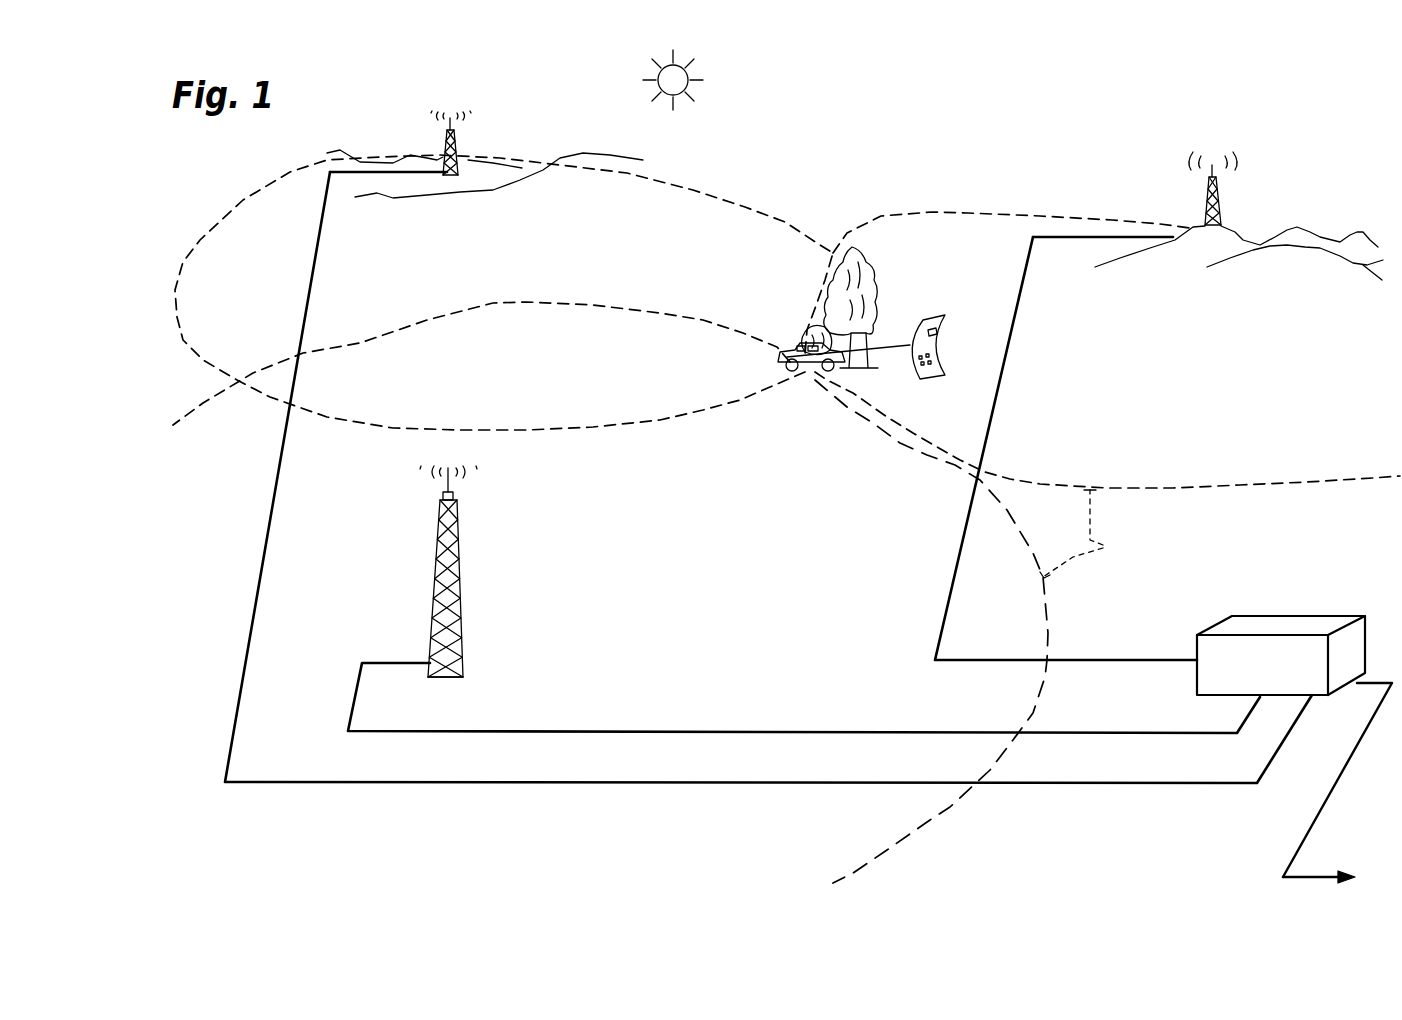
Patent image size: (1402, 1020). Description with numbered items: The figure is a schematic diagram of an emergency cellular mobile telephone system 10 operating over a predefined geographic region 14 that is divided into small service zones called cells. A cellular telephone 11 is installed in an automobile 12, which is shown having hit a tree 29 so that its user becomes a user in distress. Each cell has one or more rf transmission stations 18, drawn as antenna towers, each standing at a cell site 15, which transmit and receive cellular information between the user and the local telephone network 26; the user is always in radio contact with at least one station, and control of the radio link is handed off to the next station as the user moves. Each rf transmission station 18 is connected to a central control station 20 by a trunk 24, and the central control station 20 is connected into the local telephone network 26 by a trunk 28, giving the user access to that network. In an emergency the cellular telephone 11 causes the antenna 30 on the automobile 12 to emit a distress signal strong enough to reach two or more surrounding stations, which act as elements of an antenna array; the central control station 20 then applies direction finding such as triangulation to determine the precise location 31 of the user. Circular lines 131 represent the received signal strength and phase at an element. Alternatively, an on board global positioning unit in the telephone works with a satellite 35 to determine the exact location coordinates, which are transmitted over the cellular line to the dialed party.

The emergency cellular mobile telephone system 10 is at (970, 830).
The cellular telephone 11 is at (943, 340).
The automobile 12 is at (777, 360).
The geographic region 14 is at (781, 566).
The cell site 15 is at (473, 689).
The rf transmission station 18 is at (444, 163).
The central control station 20 is at (1255, 626).
The trunk 24 is at (946, 614).
The local telephone network 26 is at (1219, 854).
The trunk 28 is at (1338, 782).
The tree 29 is at (872, 290).
The antenna 30 is at (805, 337).
The location 31 is at (812, 392).
The satellite 35 is at (657, 76).
The circular lines 131 is at (1089, 534).